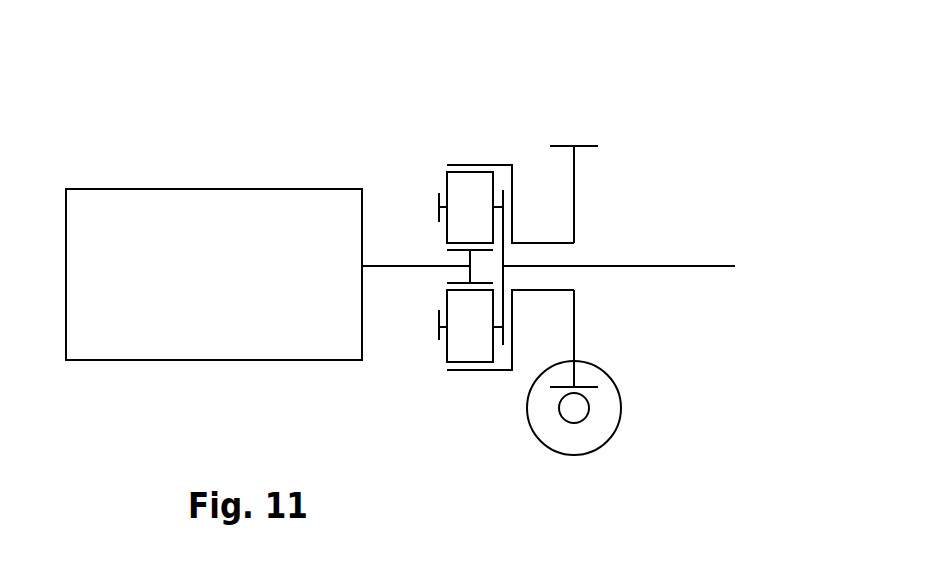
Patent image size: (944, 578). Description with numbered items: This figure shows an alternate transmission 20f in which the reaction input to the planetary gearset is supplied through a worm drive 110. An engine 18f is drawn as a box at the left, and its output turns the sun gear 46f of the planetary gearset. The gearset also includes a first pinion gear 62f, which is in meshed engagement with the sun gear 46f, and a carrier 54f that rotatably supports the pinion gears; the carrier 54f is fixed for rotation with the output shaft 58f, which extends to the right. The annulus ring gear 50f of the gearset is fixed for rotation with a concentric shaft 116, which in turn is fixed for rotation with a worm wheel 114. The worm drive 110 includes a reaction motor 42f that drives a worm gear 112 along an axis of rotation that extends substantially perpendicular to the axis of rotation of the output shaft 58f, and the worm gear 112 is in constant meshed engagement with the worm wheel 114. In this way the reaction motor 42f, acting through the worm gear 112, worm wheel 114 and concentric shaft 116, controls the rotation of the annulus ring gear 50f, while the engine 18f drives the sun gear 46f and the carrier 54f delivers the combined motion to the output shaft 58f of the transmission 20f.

The engine 18f is at (207, 188).
The transmission 20f is at (676, 56).
The worm drive 110 is at (578, 126).
The output shaft 58f is at (715, 263).
The worm wheel 114 is at (574, 183).
The concentric shaft 116 is at (533, 242).
The annulus ring gear 50f is at (457, 165).
The first pinion gear 62f is at (458, 185).
The carrier 54f is at (437, 205).
The sun gear 46f is at (458, 258).
The reaction motor 42f is at (620, 392).
The worm gear 112 is at (559, 417).